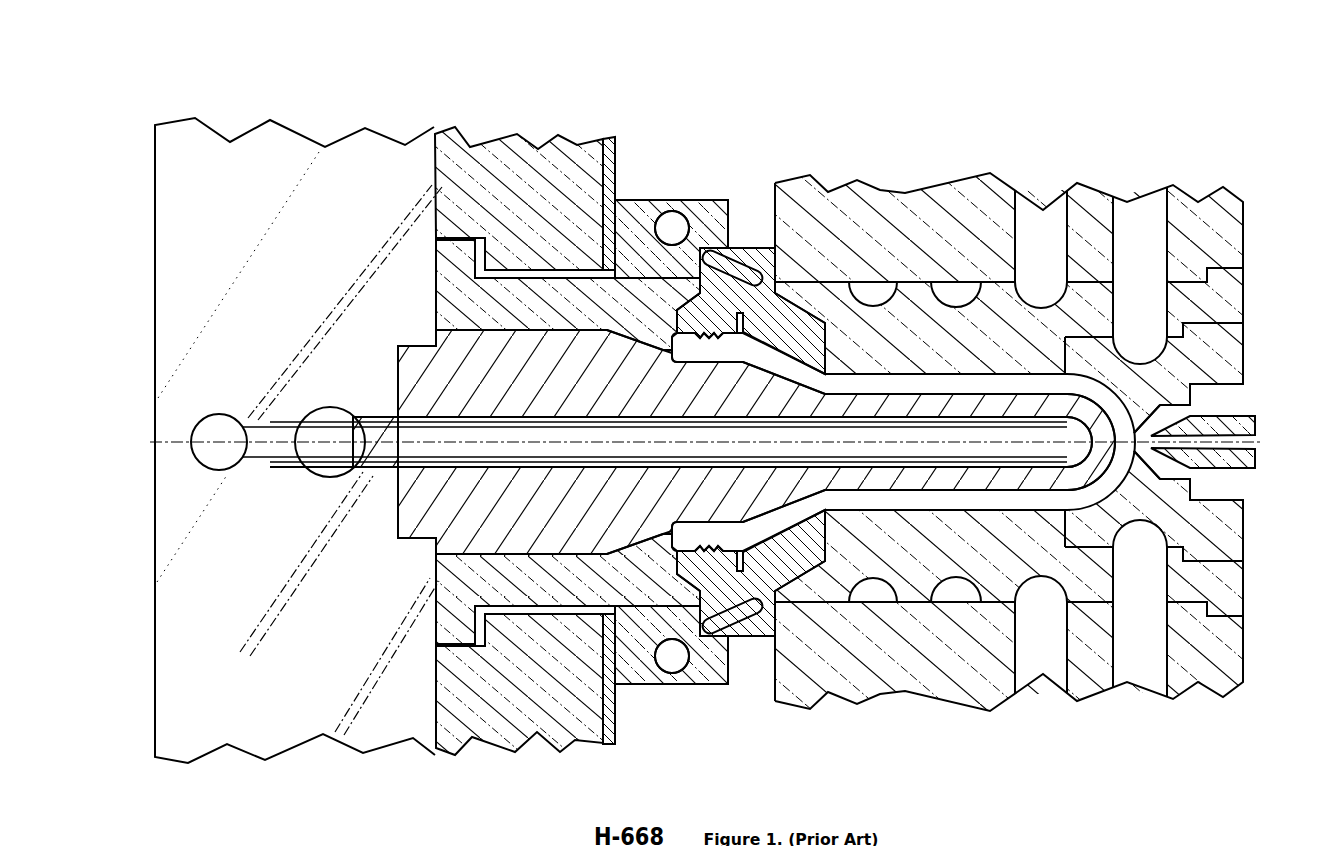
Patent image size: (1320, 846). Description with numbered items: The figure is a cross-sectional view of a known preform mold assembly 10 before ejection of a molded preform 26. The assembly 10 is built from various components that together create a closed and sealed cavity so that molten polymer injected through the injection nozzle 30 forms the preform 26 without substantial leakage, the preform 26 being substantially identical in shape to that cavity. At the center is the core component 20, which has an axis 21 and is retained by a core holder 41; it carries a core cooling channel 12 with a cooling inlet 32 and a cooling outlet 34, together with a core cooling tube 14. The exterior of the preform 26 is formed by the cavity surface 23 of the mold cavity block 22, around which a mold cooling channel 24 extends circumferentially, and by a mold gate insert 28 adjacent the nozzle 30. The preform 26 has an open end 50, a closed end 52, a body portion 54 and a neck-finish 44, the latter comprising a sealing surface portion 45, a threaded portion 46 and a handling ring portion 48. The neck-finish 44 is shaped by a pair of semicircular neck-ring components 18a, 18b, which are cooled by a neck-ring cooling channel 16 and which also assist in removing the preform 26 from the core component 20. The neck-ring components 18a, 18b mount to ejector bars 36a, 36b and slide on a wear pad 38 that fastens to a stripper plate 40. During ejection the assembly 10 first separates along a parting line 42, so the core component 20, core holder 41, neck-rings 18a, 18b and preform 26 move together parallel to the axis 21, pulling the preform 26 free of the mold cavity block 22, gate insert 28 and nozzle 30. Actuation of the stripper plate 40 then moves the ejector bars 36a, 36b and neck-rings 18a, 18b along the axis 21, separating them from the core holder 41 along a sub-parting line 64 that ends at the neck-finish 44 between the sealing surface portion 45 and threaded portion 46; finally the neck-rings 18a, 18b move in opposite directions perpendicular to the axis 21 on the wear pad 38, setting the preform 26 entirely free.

The preform mold assembly 10 is at (967, 88).
The core cooling channel 12 is at (258, 435).
The core cooling tube 14 is at (383, 432).
The neck-ring cooling channel 16 is at (757, 263).
The neck-ring component 18a is at (765, 630).
The neck-ring component 18b is at (790, 325).
The core component 20 is at (427, 387).
The axis 21 is at (182, 443).
The mold cavity block 22 is at (1003, 313).
The cavity surface 23 is at (905, 372).
The mold cooling channel 24 is at (1047, 227).
The preform 26 is at (813, 337).
The mold gate insert 28 is at (1218, 347).
The injection nozzle 30 is at (1237, 427).
The cooling inlet 32 is at (210, 435).
The cooling outlet 34 is at (327, 415).
The ejector bar 36a is at (643, 673).
The ejector bar 36b is at (640, 208).
The wear pad 38 is at (603, 160).
The stripper plate 40 is at (502, 168).
The core holder 41 is at (517, 310).
The parting line 42 is at (838, 376).
The neck-finish 44 is at (735, 594).
The sealing surface portion 45 is at (663, 327).
The threaded portion 46 is at (665, 598).
The handling ring portion 48 is at (777, 590).
The open end 50 is at (670, 587).
The closed end 52 is at (1115, 480).
The body portion 54 is at (950, 500).
The sub-parting line 64 is at (722, 262).